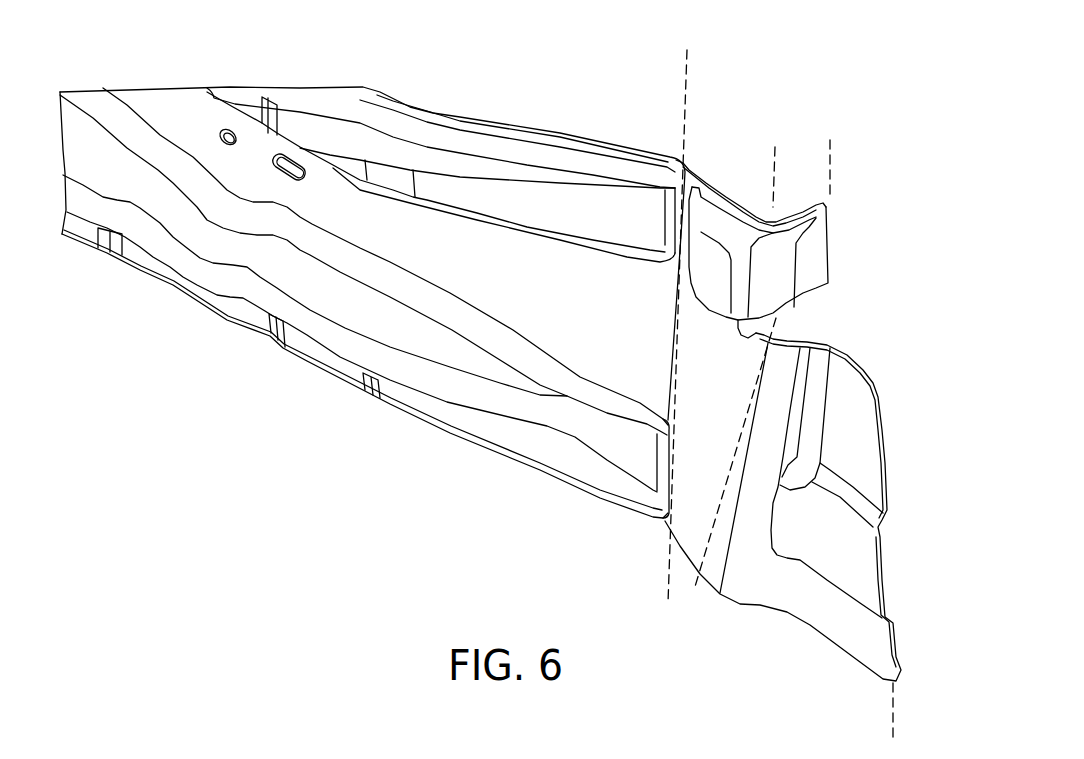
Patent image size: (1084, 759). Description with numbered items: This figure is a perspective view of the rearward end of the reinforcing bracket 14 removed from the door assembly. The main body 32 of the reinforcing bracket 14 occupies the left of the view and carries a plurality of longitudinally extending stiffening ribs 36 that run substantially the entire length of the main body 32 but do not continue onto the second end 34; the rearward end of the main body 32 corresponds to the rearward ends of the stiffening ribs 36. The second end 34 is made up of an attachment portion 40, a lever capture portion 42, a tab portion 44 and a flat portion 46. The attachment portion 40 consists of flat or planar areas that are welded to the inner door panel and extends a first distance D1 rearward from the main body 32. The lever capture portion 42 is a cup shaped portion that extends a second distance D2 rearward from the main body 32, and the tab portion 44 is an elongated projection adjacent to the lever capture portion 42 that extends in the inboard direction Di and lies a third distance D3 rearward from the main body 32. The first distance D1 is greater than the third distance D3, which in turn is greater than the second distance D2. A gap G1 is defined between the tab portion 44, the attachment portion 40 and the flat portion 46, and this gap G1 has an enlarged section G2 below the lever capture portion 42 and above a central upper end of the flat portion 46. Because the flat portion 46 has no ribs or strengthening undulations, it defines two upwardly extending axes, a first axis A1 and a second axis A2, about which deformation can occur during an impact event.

The reinforcing bracket 14 is at (438, 85).
The main body 32 is at (348, 210).
The second end 34 is at (865, 360).
The stiffening ribs 36 is at (523, 200).
The attachment portion 40 is at (847, 440).
The lever capture portion 42 is at (717, 273).
The tab portion 44 is at (817, 254).
The flat portion 46 is at (690, 450).
The first axis A1 is at (677, 367).
The second axis A2 is at (742, 437).
The gap G1 is at (767, 343).
The enlarged section G2 is at (760, 312).
The first distance D1 is at (893, 730).
The second distance D2 is at (776, 163).
The third distance D3 is at (831, 151).
The inboard direction Di is at (961, 612).